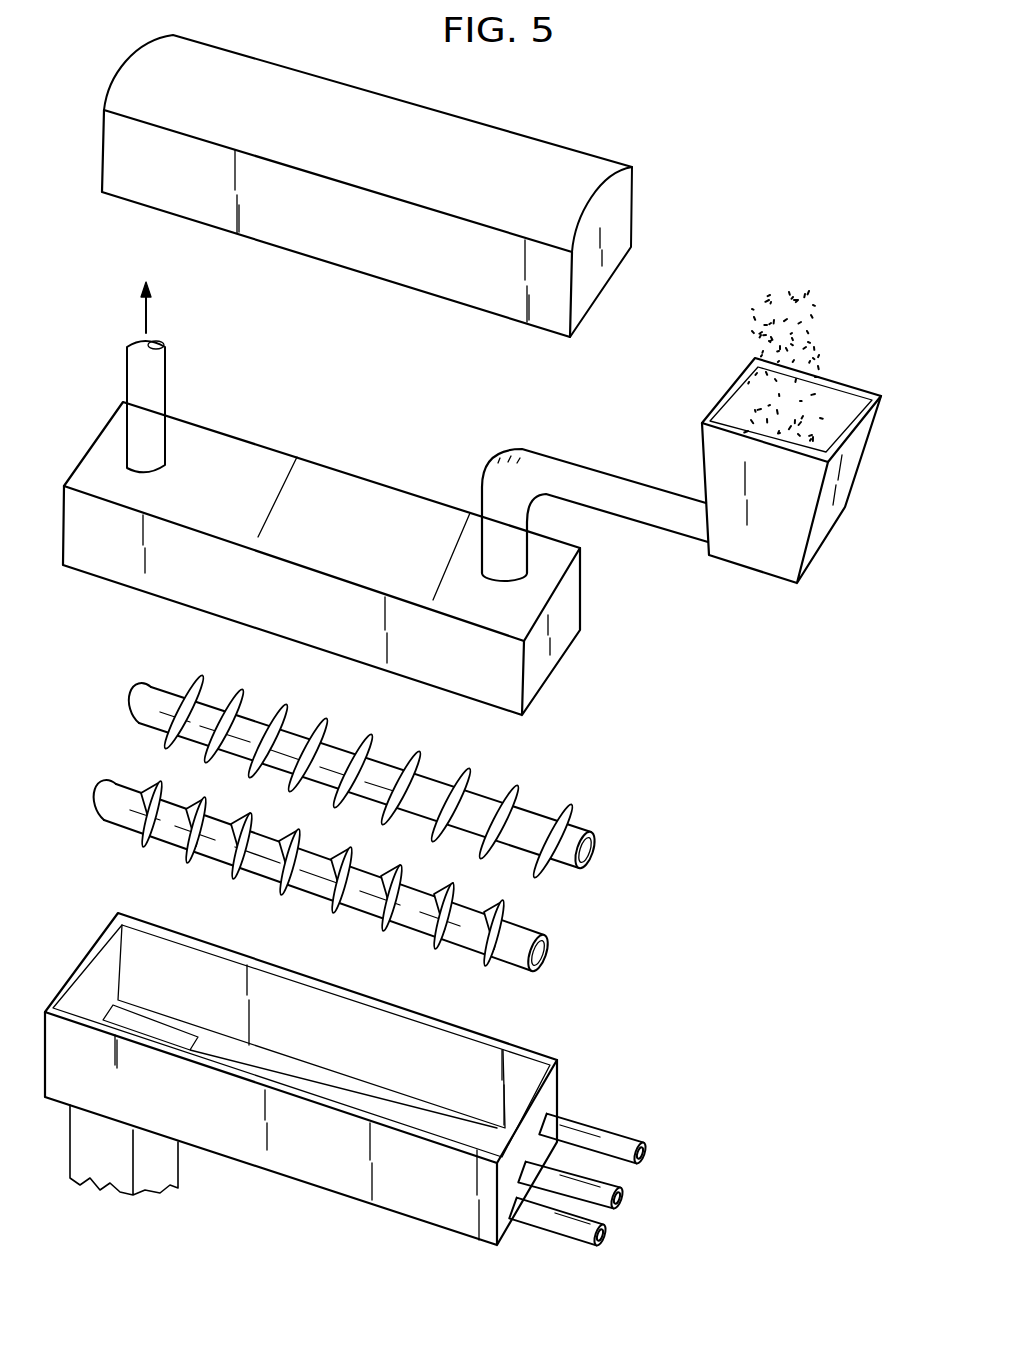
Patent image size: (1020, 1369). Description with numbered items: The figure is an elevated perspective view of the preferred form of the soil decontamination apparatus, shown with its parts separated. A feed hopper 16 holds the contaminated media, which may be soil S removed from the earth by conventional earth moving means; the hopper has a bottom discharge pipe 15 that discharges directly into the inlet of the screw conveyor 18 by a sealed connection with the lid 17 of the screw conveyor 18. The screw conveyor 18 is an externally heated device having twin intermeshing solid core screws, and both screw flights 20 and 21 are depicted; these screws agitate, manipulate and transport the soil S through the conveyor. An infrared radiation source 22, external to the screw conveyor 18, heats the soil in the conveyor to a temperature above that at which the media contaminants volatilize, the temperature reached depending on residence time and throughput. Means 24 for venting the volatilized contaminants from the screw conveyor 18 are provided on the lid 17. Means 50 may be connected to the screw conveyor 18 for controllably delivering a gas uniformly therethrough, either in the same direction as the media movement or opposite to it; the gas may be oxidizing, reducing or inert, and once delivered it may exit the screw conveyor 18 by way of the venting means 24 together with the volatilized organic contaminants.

The bottom discharge pipe 15 is at (628, 487).
The feed hopper 16 is at (855, 450).
The lid 17 is at (550, 630).
The screw conveyor 18 is at (548, 1088).
The screw flight 20 is at (545, 958).
The screw flight 21 is at (592, 860).
The infrared radiation source 22 is at (515, 155).
The means for venting 24 is at (150, 358).
The means for controllably delivering a gas 50 is at (551, 1227).
The soil S is at (803, 313).